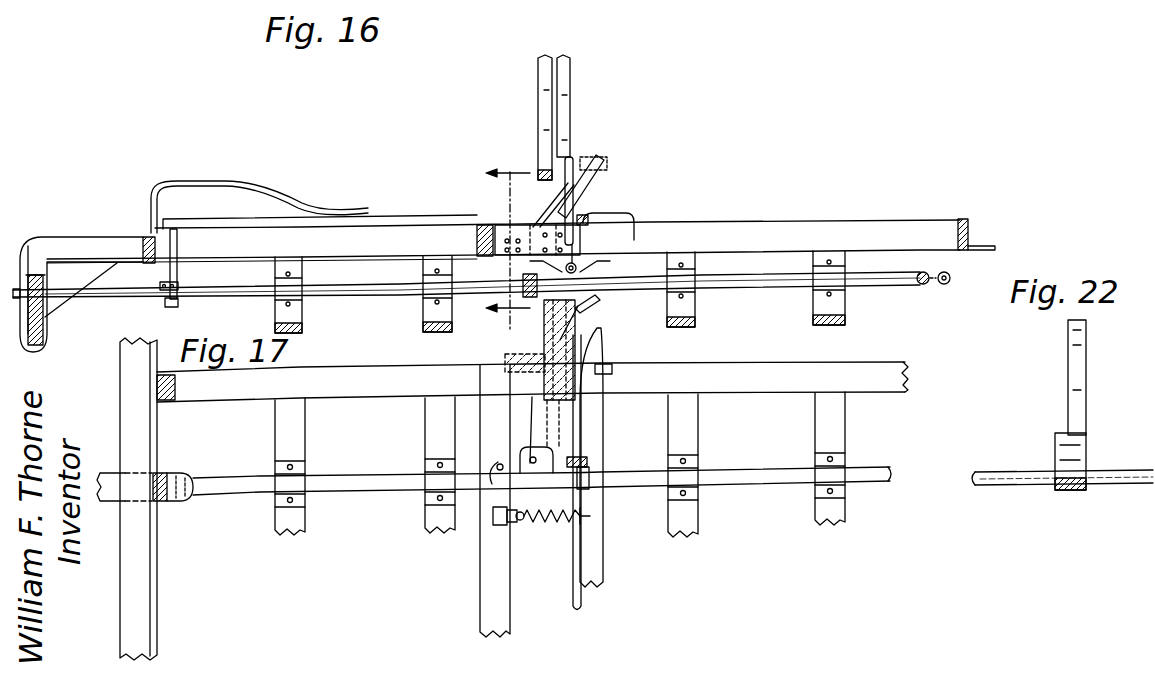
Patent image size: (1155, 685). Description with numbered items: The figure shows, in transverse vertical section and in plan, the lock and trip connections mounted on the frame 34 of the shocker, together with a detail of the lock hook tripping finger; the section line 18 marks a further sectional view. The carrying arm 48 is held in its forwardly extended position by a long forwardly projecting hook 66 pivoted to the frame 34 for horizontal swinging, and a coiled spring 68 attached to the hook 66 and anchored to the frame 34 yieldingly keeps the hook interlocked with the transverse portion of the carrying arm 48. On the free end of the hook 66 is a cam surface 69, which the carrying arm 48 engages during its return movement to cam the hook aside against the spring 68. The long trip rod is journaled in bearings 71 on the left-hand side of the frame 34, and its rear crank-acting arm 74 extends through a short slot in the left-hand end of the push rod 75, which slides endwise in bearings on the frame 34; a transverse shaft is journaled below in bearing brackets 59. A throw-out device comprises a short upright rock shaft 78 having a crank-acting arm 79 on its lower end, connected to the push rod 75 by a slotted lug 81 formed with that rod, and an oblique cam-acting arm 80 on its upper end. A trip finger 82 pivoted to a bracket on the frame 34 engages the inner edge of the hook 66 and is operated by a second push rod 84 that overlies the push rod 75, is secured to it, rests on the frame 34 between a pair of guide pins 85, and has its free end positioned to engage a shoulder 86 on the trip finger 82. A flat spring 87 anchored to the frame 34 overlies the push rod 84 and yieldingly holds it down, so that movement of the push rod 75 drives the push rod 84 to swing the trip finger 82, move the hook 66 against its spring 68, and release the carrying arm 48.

In FIG. 16, the section line 18- 18 is at (508, 246).
In FIG. 16, the frame 34 is at (915, 228).
In FIG. 17, the frame 34 is at (137, 567).
In FIG. 16, the carrying arm 48 is at (566, 70).
In FIG. 17, the carrying arm 48 is at (588, 336).
In FIG. 16, the bearing brackets 59 is at (424, 314).
In FIG. 17, the bearing brackets 59 is at (430, 520).
In FIG. 16, the hook 66 is at (580, 156).
In FIG. 17, the hook 66 is at (602, 343).
In FIG. 17, the coiled spring 68 is at (545, 523).
In FIG. 17, the cam surface 69 is at (611, 373).
In FIG. 16, the bearings 71 is at (69, 242).
In FIG. 16, the crank-acting arm 74 is at (46, 321).
In FIG. 16, the push rod 75 is at (128, 300).
In FIG. 17, the push rod 75 is at (727, 484).
In FIG. 22, the push rod 75 is at (1062, 477).
In FIG. 16, the upright rock shaft 78 is at (523, 226).
In FIG. 17, the upright rock shaft 78 is at (530, 356).
In FIG. 16, the crank-acting arm 79 is at (540, 296).
In FIG. 17, the crank-acting arm 79 is at (537, 423).
In FIG. 16, the oblique cam-acting arm 80 is at (601, 157).
In FIG. 17, the oblique cam-acting arm 80 is at (601, 301).
In FIG. 16, the slotted lug 81 is at (521, 289).
In FIG. 17, the slotted lug 81 is at (530, 478).
In FIG. 16, the trip finger 82 is at (590, 214).
In FIG. 17, the trip finger 82 is at (587, 459).
In FIG. 22, the trip finger 82 is at (1087, 336).
In FIG. 16, the push rod 84 is at (376, 217).
In FIG. 17, the push rod 84 is at (357, 476).
In FIG. 16, the guide pins 85 is at (489, 222).
In FIG. 17, the guide pins 85 is at (492, 488).
In FIG. 16, the shoulder 86 is at (621, 234).
In FIG. 17, the shoulder 86 is at (584, 485).
In FIG. 22, the shoulder 86 is at (1055, 433).
In FIG. 16, the flat spring 87 is at (246, 182).
In FIG. 17, the flat spring 87 is at (163, 502).